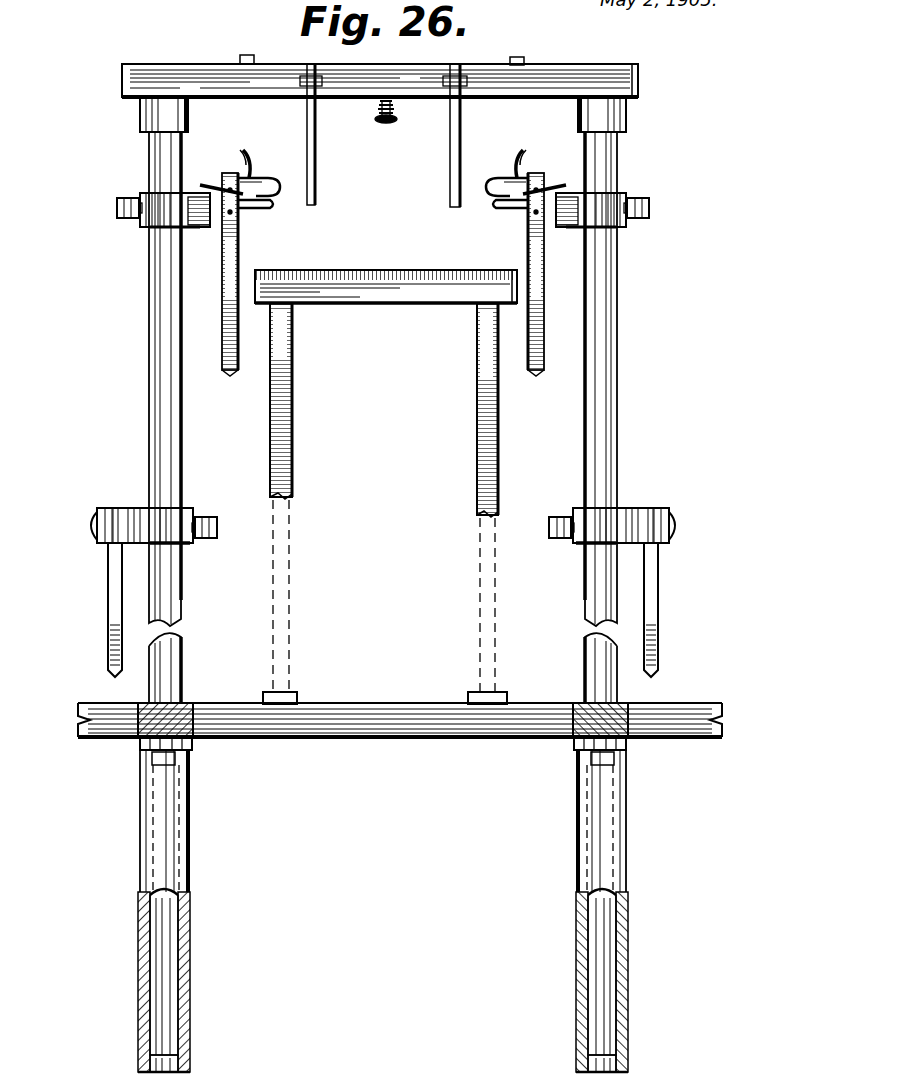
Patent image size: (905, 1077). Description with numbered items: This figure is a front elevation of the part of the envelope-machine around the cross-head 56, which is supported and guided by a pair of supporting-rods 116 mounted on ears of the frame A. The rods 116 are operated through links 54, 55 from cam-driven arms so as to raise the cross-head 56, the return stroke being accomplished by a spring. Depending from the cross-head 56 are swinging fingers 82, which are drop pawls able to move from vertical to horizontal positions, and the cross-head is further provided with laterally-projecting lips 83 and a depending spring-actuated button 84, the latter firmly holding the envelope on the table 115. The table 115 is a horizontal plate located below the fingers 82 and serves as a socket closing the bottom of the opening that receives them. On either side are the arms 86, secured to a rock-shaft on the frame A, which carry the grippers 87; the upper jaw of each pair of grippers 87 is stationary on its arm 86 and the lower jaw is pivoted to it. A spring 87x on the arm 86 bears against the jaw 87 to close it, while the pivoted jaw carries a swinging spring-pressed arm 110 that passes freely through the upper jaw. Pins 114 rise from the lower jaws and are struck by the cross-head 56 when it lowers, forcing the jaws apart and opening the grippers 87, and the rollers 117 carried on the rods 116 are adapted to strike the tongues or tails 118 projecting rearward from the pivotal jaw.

The cross-head 56 is at (148, 78).
The laterally-projecting lips 83 is at (246, 58).
The swinging fingers 82 is at (312, 140).
The spring-actuated button 84 is at (386, 124).
The supporting-rods 116 is at (160, 383).
The rollers 117 is at (196, 225).
The arms 86 is at (232, 374).
The grippers 87 is at (276, 200).
The spring 87x is at (252, 212).
The pins 114 is at (250, 157).
The swinging spring-pressed arm 110 is at (241, 151).
The tongues or tails 118 is at (213, 184).
The table 115 is at (386, 275).
The frame A is at (385, 505).
The link 55 is at (138, 592).
The link 54 is at (626, 592).